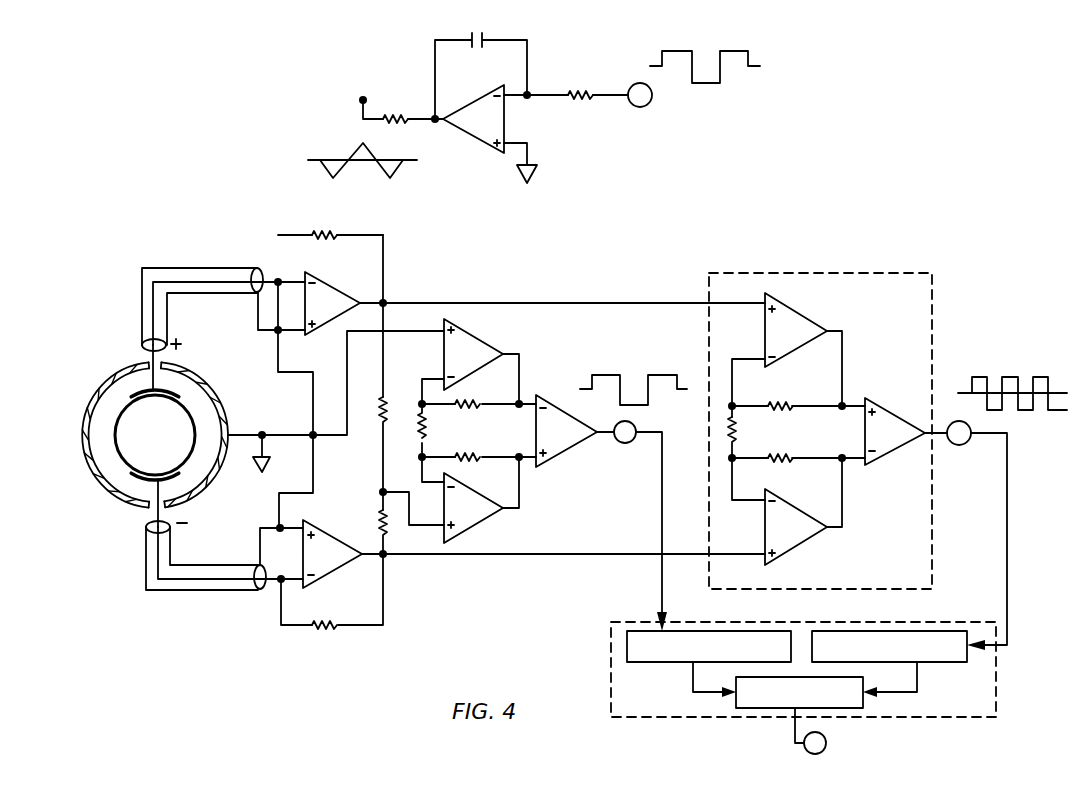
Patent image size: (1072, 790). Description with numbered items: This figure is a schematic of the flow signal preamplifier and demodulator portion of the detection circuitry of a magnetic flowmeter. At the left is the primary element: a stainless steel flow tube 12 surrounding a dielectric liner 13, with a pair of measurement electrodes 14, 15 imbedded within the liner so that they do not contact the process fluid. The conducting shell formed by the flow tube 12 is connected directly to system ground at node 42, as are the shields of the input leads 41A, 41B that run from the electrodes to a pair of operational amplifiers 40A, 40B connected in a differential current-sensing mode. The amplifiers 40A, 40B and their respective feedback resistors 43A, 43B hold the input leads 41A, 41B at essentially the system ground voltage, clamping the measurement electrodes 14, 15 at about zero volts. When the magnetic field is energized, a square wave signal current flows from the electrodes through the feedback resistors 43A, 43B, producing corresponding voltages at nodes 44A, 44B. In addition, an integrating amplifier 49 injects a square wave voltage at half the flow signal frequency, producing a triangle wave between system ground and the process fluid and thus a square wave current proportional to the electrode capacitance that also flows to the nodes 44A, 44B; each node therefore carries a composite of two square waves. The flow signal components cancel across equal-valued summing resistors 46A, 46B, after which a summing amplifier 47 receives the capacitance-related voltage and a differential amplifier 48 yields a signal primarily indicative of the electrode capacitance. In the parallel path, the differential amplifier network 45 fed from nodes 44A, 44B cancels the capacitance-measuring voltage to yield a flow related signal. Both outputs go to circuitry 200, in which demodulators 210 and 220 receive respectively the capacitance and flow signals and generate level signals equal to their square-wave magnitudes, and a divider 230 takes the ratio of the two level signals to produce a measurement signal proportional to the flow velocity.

The flow tube 12 is at (128, 368).
The dielectric liner 13 is at (190, 483).
The measurement electrode 14 is at (128, 500).
The measurement electrode 15 is at (177, 382).
The operational amplifier 40A is at (318, 280).
The operational amplifier 40B is at (327, 575).
The input lead 41A is at (152, 298).
The input lead 41B is at (145, 562).
The system ground node 42 is at (263, 432).
The feedback resistor 43A is at (333, 233).
The feedback resistor 43B is at (338, 628).
The node 44A is at (386, 302).
The node 44B is at (392, 563).
The differential amplifier 45 is at (876, 589).
The summing resistor 46A is at (386, 395).
The summing resistor 46B is at (381, 522).
The summing amplifier 47 is at (483, 518).
The differential amplifier 48 is at (552, 458).
The integrating amplifier 49 is at (482, 143).
The circuitry 200 is at (611, 625).
The demodulator 210 is at (720, 630).
The demodulator 220 is at (943, 630).
The divider 230 is at (777, 710).